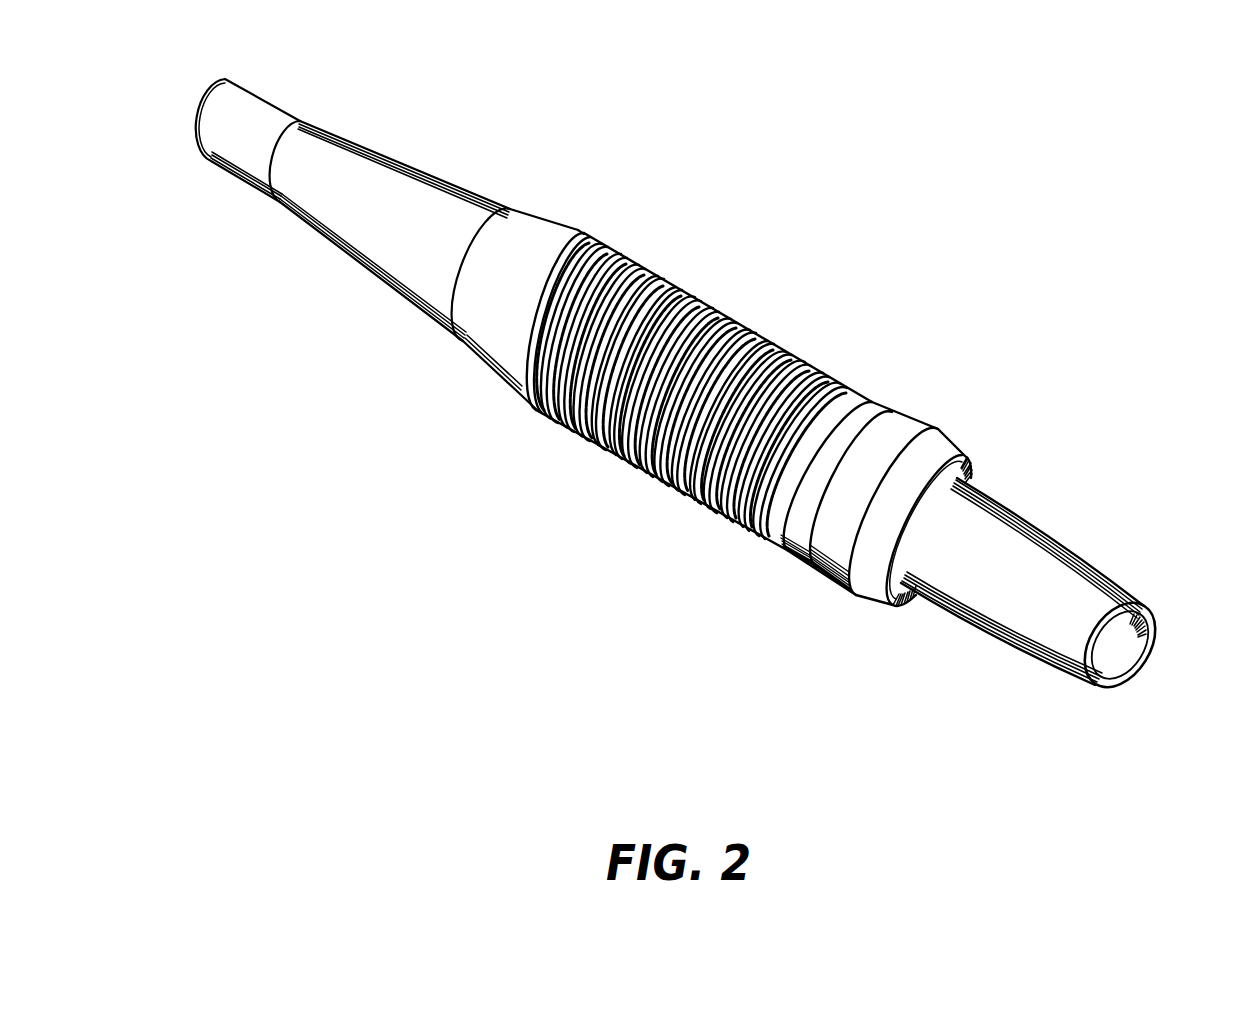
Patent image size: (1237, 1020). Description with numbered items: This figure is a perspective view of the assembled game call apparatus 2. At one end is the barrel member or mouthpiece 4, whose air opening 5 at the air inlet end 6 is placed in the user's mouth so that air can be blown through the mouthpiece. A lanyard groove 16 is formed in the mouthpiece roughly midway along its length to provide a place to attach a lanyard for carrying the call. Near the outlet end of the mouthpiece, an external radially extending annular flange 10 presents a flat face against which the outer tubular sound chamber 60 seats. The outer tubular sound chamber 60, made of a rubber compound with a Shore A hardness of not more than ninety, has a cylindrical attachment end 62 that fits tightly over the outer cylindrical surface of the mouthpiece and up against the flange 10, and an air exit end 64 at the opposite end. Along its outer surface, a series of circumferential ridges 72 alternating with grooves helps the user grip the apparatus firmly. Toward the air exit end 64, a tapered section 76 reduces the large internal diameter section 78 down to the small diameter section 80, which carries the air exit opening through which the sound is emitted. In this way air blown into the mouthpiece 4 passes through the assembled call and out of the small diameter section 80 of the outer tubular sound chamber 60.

The game call apparatus 2 is at (873, 165).
The mouthpiece 4 is at (1138, 466).
The air opening 5 is at (1130, 650).
The air inlet end 6 is at (1045, 688).
The annular flange 10 is at (933, 427).
The lanyard groove 16 is at (880, 600).
The outer tubular sound chamber 60 is at (573, 567).
The cylindrical attachment end 62 is at (893, 387).
The air exit end 64 is at (418, 137).
The ridges 72 is at (770, 327).
The tapered section 76 is at (385, 242).
The large internal diameter section 78 is at (540, 240).
The small diameter section 80 is at (250, 138).